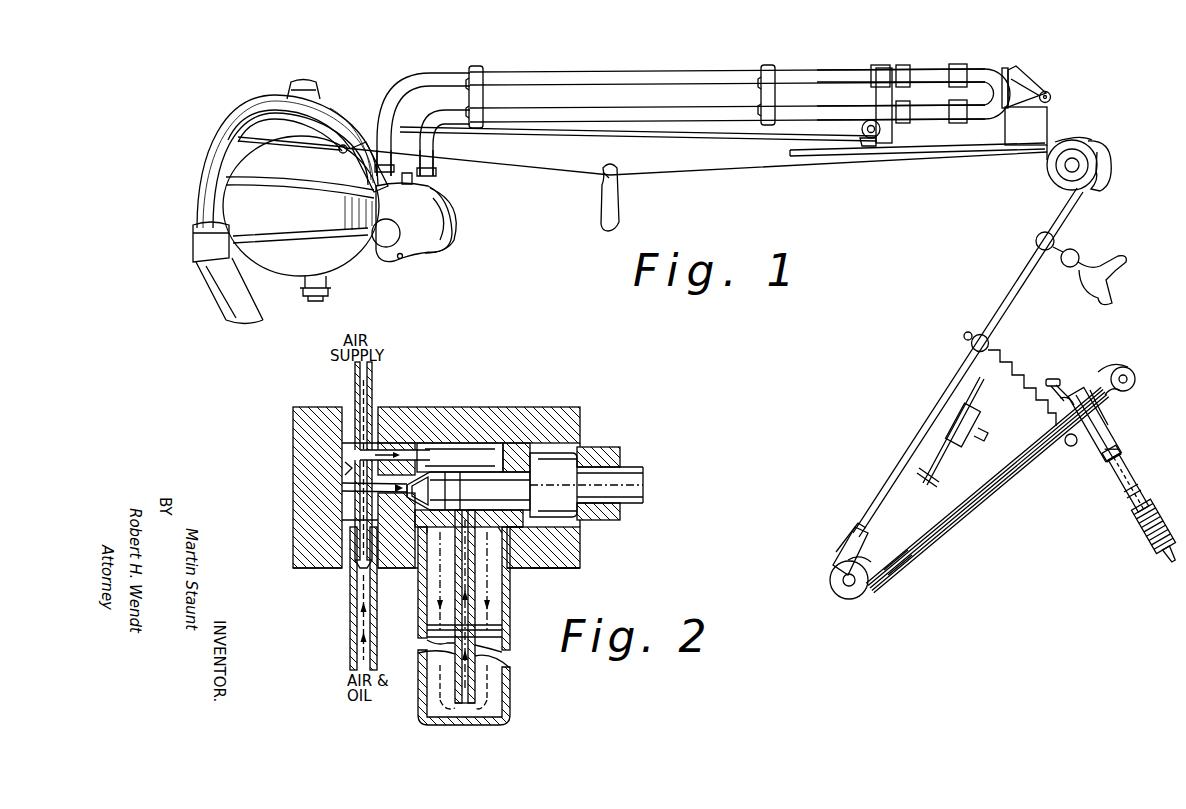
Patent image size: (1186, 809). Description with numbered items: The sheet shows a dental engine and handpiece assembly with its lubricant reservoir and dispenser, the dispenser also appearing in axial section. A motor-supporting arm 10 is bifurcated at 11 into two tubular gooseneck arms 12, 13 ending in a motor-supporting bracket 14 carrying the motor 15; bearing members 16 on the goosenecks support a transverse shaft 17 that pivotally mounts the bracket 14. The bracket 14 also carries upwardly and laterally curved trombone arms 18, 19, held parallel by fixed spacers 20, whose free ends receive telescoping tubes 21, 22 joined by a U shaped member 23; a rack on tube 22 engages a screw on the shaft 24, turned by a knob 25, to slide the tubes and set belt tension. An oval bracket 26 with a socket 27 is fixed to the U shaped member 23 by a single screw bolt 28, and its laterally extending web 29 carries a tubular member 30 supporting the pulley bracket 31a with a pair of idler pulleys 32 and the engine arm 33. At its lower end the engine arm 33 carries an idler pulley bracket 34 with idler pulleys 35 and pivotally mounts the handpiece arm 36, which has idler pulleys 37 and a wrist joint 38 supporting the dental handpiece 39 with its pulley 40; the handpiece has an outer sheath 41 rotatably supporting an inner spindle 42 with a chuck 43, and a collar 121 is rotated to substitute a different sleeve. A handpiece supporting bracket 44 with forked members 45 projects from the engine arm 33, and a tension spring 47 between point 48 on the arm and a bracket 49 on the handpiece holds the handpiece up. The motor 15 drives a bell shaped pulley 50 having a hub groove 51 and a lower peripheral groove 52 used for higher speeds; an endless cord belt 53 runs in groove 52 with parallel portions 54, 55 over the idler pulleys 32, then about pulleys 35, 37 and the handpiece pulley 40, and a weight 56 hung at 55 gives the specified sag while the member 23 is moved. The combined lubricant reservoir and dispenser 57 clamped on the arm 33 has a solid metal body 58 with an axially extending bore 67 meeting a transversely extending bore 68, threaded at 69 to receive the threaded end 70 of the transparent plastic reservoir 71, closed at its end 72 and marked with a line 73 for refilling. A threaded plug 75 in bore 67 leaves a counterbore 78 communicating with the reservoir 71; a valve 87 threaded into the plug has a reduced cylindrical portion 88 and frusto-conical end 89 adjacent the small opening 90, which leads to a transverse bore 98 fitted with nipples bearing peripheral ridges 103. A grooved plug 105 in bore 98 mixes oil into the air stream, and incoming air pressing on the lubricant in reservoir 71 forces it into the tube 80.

In FIG. 1, the motor-supporting arm 10 is at (233, 298).
In FIG. 1, the bifurcation 11 is at (193, 241).
In FIG. 1, the tubular gooseneck arm 12 is at (240, 112).
In FIG. 1, the tubular gooseneck arm 13 is at (326, 98).
In FIG. 1, the motor-supporting bracket 14 is at (442, 207).
In FIG. 1, the motor 15 is at (290, 260).
In FIG. 1, the bearing members 16 is at (430, 233).
In FIG. 1, the transverse shaft 17 is at (386, 248).
In FIG. 1, the trombone arm 18 is at (549, 72).
In FIG. 1, the trombone arm 19 is at (551, 118).
In FIG. 1, the fixed spacers 20 is at (470, 90).
In FIG. 1, the telescoping tube 21 is at (926, 72).
In FIG. 1, the telescoping tube 22 is at (918, 113).
In FIG. 1, the U shaped member 23 is at (983, 70).
In FIG. 1, the shaft 24 is at (868, 112).
In FIG. 1, the knob 25 is at (800, 167).
In FIG. 1, the oval bracket 26 is at (1030, 85).
In FIG. 1, the socket 27 is at (1006, 88).
In FIG. 1, the screw bolt 28 is at (1052, 97).
In FIG. 1, the laterally extending web 29 is at (1035, 128).
In FIG. 1, the tubular member 30 is at (1066, 143).
In FIG. 1, the pulley bracket 31a is at (1106, 153).
In FIG. 1, the idler pulleys 32 is at (1048, 185).
In FIG. 1, the engine arm 33 is at (1020, 263).
In FIG. 1, the idler pulley bracket 34 is at (838, 549).
In FIG. 1, the idler pulleys 35 is at (862, 597).
In FIG. 1, the handpiece arm 36 is at (960, 504).
In FIG. 1, the idler pulleys 37 is at (1133, 370).
In FIG. 1, the wrist joint 38 is at (1080, 455).
In FIG. 1, the dental handpiece 39 is at (1108, 481).
In FIG. 1, the pulley 40 is at (1077, 396).
In FIG. 1, the outer sheath 41 is at (1130, 484).
In FIG. 1, the inner spindle 42 is at (1118, 456).
In FIG. 1, the chuck 43 is at (1166, 554).
In FIG. 1, the handpiece supporting bracket 44 is at (1056, 236).
In FIG. 1, the forked members 45 is at (1110, 264).
In FIG. 1, the tension spring 47 is at (1022, 383).
In FIG. 1, the point 48 is at (972, 336).
In FIG. 1, the bracket 49 is at (1069, 447).
In FIG. 1, the bell shaped pulley 50 is at (274, 120).
In FIG. 1, the groove 51 is at (316, 86).
In FIG. 1, the peripheral groove 52 is at (340, 150).
In FIG. 1, the endless cord belt 53 is at (728, 170).
In FIG. 1, the parallel belt portion 54 is at (790, 139).
In FIG. 1, the parallel belt portion 55 is at (797, 155).
In FIG. 1, the weight 56 is at (618, 208).
In FIG. 1, the combined lubricant reservoir and dispenser 57 is at (971, 418).
In FIG. 2, the combined lubricant reservoir and dispenser 57 is at (585, 548).
In FIG. 2, the body 58 is at (564, 569).
In FIG. 2, the axially extending bore 67 is at (580, 452).
In FIG. 2, the transversely extending bore 68 is at (500, 550).
In FIG. 2, the threads 69 is at (510, 573).
In FIG. 2, the threaded end 70 is at (419, 562).
In FIG. 2, the lubricant reservoir 71 is at (512, 629).
In FIG. 2, the closed end 72 is at (478, 725).
In FIG. 2, the line 73 is at (450, 700).
In FIG. 2, the threaded plug 75 is at (595, 447).
In FIG. 2, the counterbore 78 is at (494, 474).
In FIG. 2, the tube 80 is at (475, 603).
In FIG. 2, the valve 87 is at (476, 474).
In FIG. 2, the reduced cylindrical portion 88 is at (453, 473).
In FIG. 2, the frusto-conical end 89 is at (418, 470).
In FIG. 2, the cylindrical opening 90 is at (385, 450).
In FIG. 2, the transverse bore 98 is at (345, 462).
In FIG. 2, the peripheral ridges 103 is at (355, 391).
In FIG. 2, the plug 105 is at (350, 530).
In FIG. 1, the collar 121 is at (1100, 474).